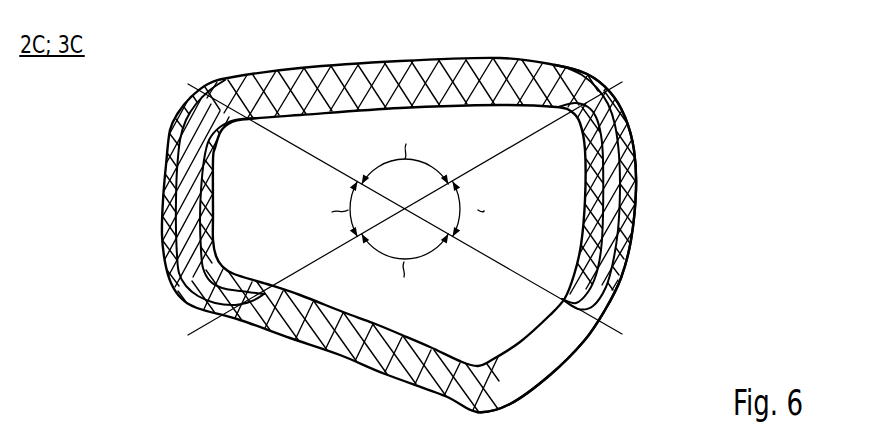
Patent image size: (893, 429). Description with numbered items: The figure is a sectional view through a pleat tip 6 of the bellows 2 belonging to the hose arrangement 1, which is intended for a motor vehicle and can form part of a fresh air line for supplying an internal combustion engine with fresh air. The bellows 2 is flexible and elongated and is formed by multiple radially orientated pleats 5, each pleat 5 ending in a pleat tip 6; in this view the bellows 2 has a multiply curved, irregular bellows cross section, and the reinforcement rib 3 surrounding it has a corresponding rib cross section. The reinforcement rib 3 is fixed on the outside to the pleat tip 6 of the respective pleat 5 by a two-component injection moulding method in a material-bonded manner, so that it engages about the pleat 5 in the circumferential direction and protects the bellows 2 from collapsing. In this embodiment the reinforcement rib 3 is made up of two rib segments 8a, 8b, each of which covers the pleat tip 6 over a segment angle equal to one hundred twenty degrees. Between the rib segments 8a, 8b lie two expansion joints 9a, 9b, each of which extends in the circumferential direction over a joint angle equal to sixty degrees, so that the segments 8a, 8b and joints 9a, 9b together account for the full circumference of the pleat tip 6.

The hose arrangement 1 is at (729, 132).
The bellows 2 is at (646, 105).
The reinforcement rib 3 is at (635, 173).
The pleat 5 is at (229, 75).
The pleat tip 6 is at (183, 112).
The rib segment 8a is at (187, 202).
The rib segment 8b is at (612, 227).
The expansion joint 9a is at (374, 92).
The expansion joint 9b is at (316, 327).